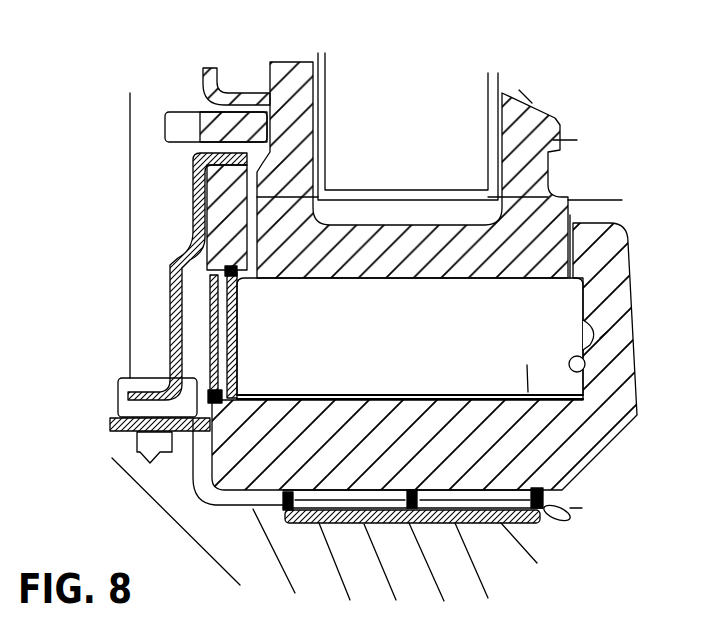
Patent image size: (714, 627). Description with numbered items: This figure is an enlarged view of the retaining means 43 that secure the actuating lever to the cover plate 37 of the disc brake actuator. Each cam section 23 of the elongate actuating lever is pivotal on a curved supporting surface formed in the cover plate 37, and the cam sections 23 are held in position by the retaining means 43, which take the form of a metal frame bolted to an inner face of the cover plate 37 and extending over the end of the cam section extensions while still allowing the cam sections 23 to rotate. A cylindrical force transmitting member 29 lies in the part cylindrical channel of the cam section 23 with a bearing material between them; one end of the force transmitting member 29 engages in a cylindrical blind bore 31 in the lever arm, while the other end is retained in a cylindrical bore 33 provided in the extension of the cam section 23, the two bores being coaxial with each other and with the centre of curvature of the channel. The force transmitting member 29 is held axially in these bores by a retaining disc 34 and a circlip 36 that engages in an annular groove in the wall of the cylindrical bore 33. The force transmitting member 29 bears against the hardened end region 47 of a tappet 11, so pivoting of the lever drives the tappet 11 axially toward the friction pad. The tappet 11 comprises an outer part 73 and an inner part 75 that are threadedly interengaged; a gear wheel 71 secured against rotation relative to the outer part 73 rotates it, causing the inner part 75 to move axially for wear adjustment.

The tappet 11 is at (281, 52).
The gear wheel 71 is at (198, 127).
The inner part 75 is at (443, 108).
The outer part 73 is at (548, 128).
The end region 47 is at (571, 240).
The retaining means 43 is at (170, 260).
The cylindrical bore 33 is at (170, 306).
The circlip 36 is at (170, 349).
The retaining disc 34 is at (238, 368).
The cylindrical blind bore 31 is at (584, 371).
The force transmitting member 29 is at (537, 400).
The cam section 23 is at (493, 460).
The cover plate 37 is at (150, 540).